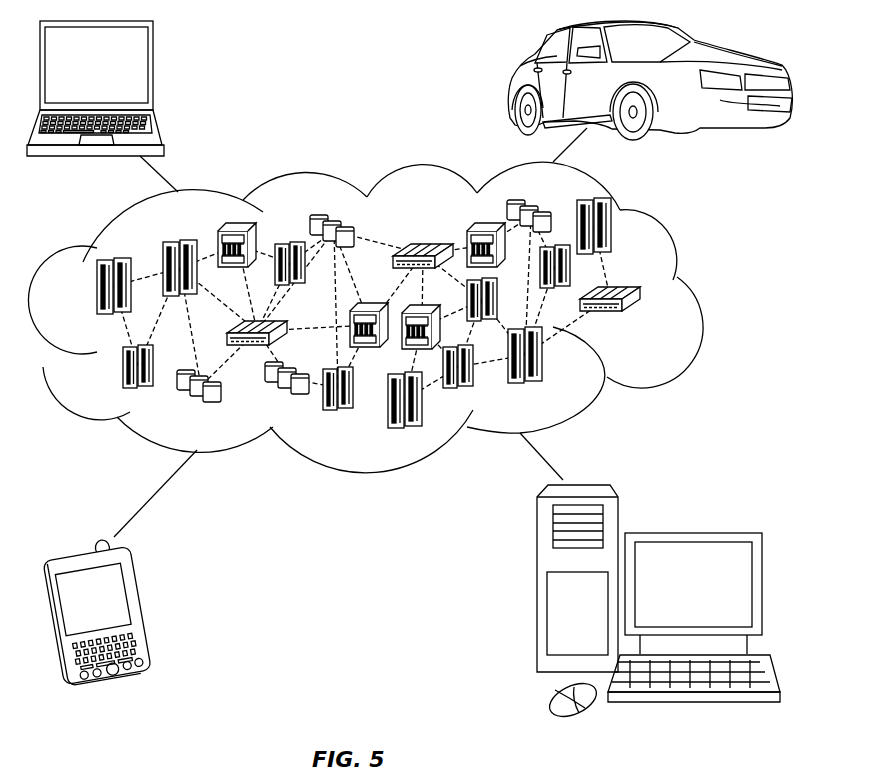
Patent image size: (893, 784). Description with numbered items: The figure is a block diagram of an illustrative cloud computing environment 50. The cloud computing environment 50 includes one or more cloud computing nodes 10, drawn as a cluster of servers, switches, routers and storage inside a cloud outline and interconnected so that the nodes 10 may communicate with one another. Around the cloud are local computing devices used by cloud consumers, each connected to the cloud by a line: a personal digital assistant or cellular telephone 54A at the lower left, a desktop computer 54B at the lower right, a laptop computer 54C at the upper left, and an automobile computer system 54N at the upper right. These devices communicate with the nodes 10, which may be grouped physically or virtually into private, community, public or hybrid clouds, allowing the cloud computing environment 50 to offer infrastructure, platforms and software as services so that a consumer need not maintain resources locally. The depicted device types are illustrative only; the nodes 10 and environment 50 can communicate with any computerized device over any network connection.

The cloud computing nodes 10 is at (652, 316).
The cloud computing environment 50 is at (689, 293).
The personal digital assistant or cellular telephone 54A is at (145, 607).
The desktop computer 54B is at (692, 532).
The laptop computer 54C is at (154, 70).
The automobile computer system 54N is at (512, 83).